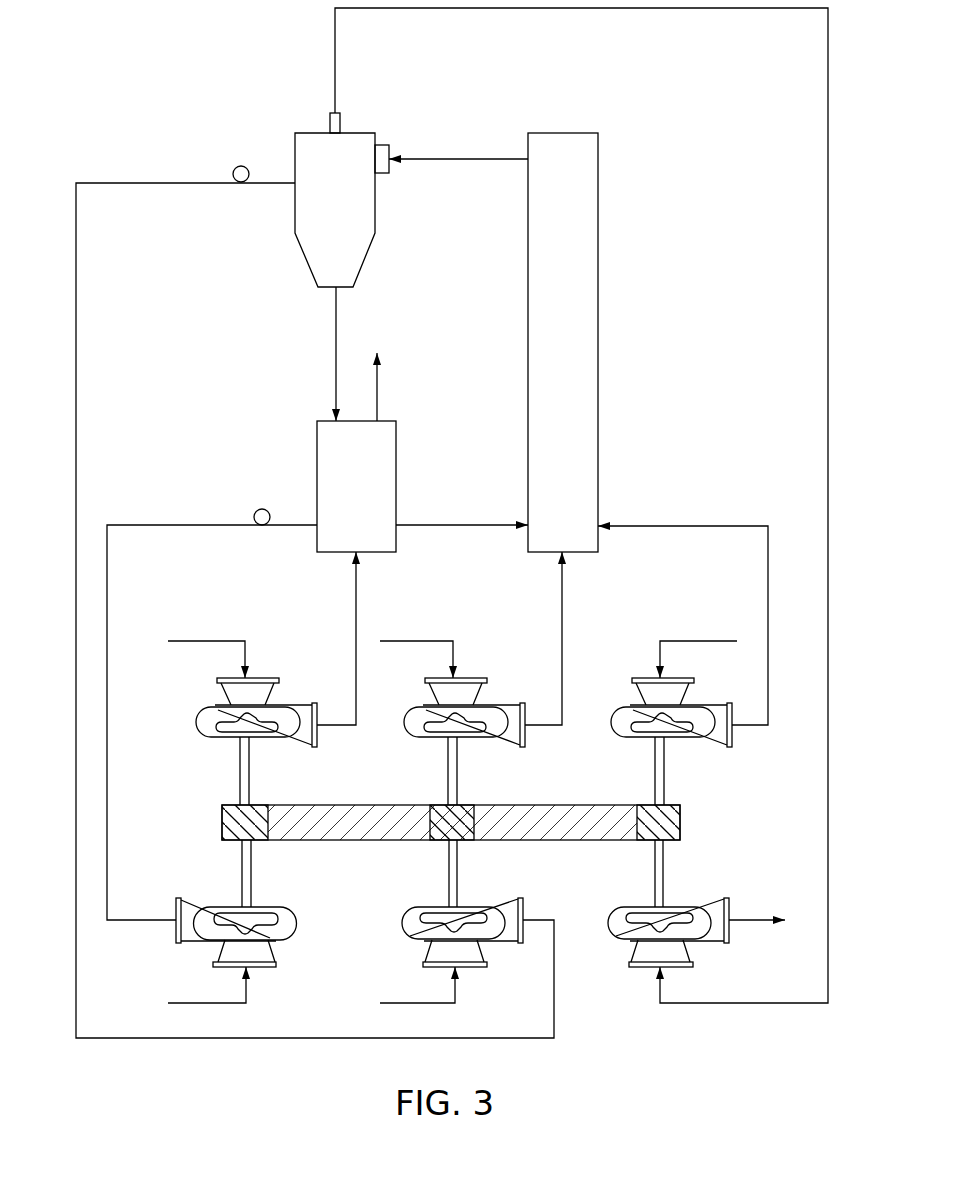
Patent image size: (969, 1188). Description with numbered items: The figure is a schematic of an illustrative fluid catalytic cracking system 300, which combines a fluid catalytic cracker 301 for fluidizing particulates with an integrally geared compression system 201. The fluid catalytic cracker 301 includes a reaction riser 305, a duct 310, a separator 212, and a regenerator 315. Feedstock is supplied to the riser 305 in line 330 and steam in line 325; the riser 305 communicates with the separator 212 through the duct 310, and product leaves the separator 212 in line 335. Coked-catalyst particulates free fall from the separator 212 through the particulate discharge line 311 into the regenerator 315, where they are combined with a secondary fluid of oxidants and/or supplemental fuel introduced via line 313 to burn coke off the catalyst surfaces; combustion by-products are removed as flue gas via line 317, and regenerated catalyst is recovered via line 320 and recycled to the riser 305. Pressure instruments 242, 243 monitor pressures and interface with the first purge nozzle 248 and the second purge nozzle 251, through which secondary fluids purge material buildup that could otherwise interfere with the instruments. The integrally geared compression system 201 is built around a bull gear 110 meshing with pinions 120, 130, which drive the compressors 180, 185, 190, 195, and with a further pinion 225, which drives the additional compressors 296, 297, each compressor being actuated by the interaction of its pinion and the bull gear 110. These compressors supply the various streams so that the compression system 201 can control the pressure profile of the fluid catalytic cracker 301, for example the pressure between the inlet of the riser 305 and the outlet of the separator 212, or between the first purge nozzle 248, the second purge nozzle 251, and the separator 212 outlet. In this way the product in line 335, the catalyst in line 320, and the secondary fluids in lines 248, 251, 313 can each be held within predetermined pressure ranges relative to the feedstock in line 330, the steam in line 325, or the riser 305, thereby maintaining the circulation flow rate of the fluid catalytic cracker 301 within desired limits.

The fluid catalytic cracking system 300 is at (170, 47).
The fluid catalytic cracker 301 is at (490, 80).
The integrally geared compression system 201 is at (208, 852).
The bull gear 110 is at (562, 845).
The pinion 120 is at (680, 820).
The pinion 130 is at (222, 820).
The pinion 225 is at (468, 805).
The compressor 180 is at (608, 720).
The compressor 185 is at (608, 923).
The compressor 190 is at (196, 720).
The compressor 195 is at (297, 920).
The additional compressor 296 is at (403, 720).
The additional compressor 297 is at (402, 920).
The separator 212 is at (354, 200).
The pressure instrument 242 is at (261, 509).
The pressure instrument 243 is at (240, 166).
The first purge nozzle 248 is at (148, 525).
The second purge nozzle 251 is at (127, 183).
The riser 305 is at (582, 342).
The duct 310 is at (424, 158).
The particulate discharge line 311 is at (336, 330).
The secondary fluid line 313 is at (356, 605).
The regenerator 315 is at (375, 489).
The flue gas line 317 is at (378, 390).
The regenerated catalyst line 320 is at (456, 525).
The steam line 325 is at (562, 603).
The feedstock line 330 is at (720, 525).
The product line 335 is at (335, 40).